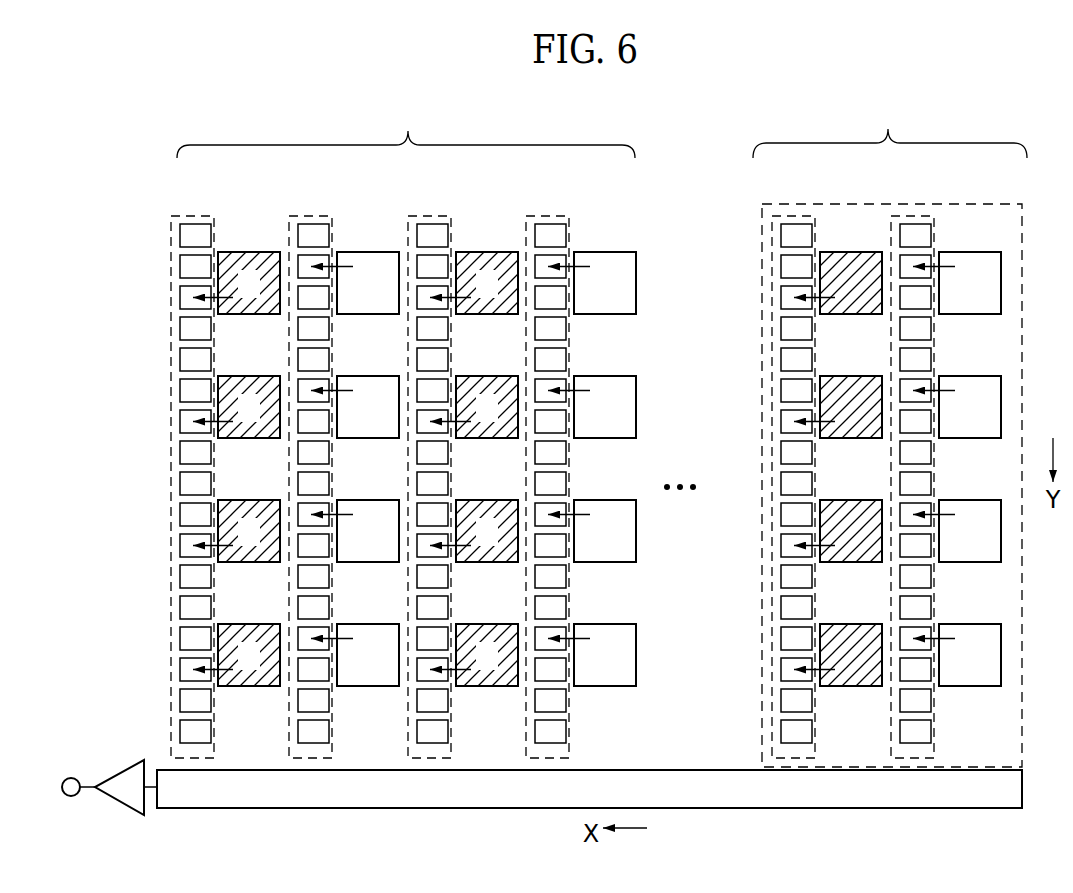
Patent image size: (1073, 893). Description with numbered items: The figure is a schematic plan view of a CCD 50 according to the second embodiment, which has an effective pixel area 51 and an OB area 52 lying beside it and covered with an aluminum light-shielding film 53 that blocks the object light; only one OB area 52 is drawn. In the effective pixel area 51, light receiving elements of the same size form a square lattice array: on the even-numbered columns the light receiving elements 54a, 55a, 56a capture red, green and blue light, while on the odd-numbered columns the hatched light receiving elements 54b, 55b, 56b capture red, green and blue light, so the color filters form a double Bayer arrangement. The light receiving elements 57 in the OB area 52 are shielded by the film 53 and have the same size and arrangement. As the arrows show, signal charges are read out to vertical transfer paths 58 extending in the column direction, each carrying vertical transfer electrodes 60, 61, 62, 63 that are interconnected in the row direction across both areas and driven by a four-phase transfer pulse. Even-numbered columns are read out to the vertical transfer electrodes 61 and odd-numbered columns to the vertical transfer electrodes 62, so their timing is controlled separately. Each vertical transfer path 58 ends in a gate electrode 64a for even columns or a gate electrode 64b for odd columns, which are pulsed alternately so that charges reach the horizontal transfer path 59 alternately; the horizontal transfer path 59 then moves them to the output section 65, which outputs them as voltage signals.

The CCD 50 is at (110, 160).
The effective pixel area 51 is at (406, 131).
The OB area 52 is at (890, 130).
The aluminum light-shielding film 53 is at (1018, 205).
The light receiving element 54a is at (377, 252).
The light receiving element 54b is at (258, 252).
The light receiving element 55a is at (377, 376).
The light receiving element 55b is at (258, 376).
The light receiving element 56a is at (614, 376).
The light receiving element 56b is at (496, 376).
The light receiving element 57 is at (854, 252).
The vertical transfer path 58 is at (190, 215).
The horizontal transfer path 59 is at (700, 769).
The vertical transfer electrode 60 is at (180, 236).
The vertical transfer electrode 61 is at (180, 266).
The vertical transfer electrode 62 is at (180, 298).
The vertical transfer electrode 63 is at (180, 328).
The gate electrode 64a is at (329, 733).
The gate electrode 64b is at (211, 733).
The output section 65 is at (124, 770).